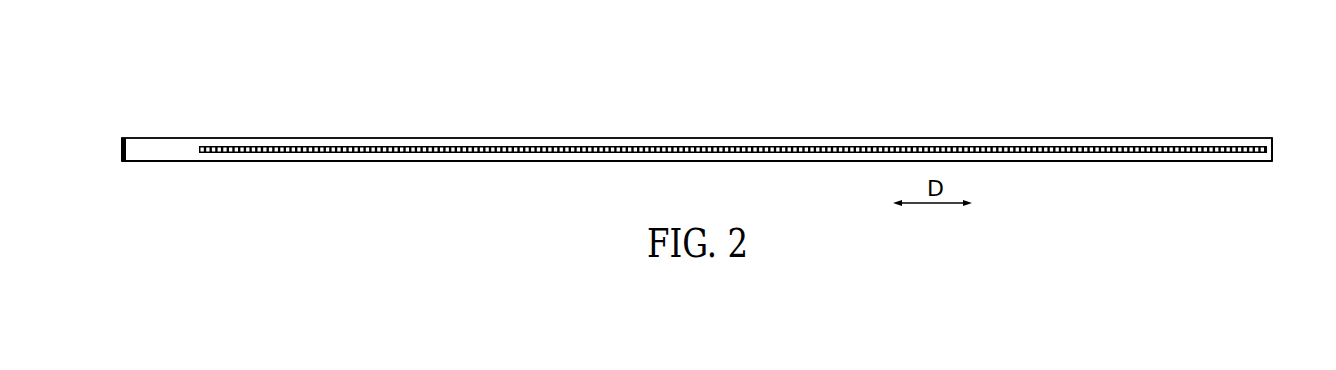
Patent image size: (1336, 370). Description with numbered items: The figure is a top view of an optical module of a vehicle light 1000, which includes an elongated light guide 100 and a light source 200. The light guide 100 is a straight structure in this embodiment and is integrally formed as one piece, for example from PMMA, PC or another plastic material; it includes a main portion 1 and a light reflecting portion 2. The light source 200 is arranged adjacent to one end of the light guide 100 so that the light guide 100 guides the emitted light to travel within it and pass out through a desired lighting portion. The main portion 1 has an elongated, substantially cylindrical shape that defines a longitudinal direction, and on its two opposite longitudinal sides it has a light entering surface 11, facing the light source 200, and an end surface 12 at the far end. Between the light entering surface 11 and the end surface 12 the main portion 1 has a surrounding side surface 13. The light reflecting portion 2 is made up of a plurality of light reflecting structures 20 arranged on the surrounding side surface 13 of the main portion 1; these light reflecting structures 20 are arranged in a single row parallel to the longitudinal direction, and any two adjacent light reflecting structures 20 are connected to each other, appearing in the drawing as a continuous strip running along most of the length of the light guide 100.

The vehicle light 1000 is at (1213, 36).
The light guide 100 is at (450, 116).
The main portion 1 is at (178, 145).
The light entering surface 11 is at (121, 156).
The end surface 12 is at (1276, 148).
The surrounding side surface 13 is at (163, 163).
The light reflecting portion 2 is at (885, 58).
The light reflecting structures 20 is at (812, 146).
The light source 200 is at (116, 130).